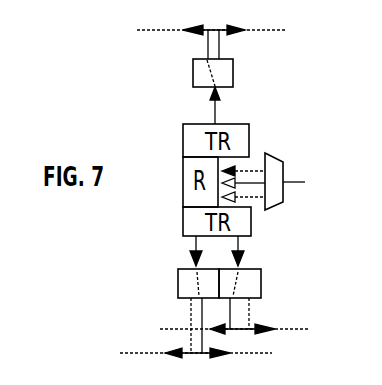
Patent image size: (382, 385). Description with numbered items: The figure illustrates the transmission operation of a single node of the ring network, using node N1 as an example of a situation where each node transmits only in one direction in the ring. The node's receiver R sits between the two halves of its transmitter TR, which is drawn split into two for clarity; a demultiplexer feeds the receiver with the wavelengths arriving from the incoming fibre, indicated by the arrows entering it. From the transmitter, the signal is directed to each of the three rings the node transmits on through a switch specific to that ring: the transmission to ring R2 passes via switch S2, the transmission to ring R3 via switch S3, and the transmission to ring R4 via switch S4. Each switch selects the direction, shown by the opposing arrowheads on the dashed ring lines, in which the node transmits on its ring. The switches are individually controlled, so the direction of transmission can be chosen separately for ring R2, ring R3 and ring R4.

The switch S2 is at (233, 74).
The fibre ring R2 is at (150, 32).
The switch S3 is at (261, 281).
The switch S4 is at (176, 282).
The fibre ring R3 is at (300, 331).
The fibre ring R4 is at (125, 350).